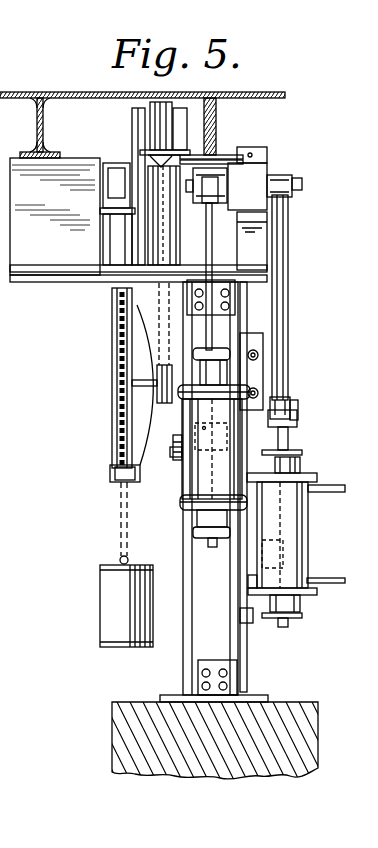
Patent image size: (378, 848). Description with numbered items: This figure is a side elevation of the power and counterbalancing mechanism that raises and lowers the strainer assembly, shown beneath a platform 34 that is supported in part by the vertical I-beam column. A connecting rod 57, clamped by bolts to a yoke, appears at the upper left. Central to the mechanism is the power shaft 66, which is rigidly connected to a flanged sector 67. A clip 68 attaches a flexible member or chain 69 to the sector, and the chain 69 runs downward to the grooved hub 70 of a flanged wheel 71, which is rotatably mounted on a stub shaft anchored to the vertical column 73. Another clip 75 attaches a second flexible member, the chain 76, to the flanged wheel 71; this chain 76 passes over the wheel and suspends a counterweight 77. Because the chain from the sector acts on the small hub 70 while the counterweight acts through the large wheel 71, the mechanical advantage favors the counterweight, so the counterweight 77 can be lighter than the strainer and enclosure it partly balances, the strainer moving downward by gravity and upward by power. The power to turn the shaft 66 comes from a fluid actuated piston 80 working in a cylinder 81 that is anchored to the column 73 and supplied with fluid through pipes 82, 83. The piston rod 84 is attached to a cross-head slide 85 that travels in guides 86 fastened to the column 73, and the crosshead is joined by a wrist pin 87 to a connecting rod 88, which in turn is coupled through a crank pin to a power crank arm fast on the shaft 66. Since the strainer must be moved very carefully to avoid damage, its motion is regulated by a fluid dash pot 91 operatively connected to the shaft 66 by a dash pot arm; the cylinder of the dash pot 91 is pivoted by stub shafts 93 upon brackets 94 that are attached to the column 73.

The platform 34 is at (62, 96).
The connecting rod 57 is at (30, 107).
The power shaft 66 is at (197, 178).
The flanged sector 67 is at (168, 228).
The clip 68 is at (371, 133).
The chain 69 is at (162, 303).
The grooved hub 70 is at (172, 410).
The flanged wheel 71 is at (113, 418).
The vertical column 73 is at (235, 645).
The clip 75 is at (115, 480).
The chain 76 is at (130, 523).
The counterweight 77 is at (125, 637).
The fluid actuated piston 80 is at (273, 555).
The cylinder 81 is at (297, 523).
The pipe 82 is at (337, 583).
The pipe 83 is at (338, 487).
The piston rod 84 is at (287, 440).
The cross-head slide 85 is at (298, 408).
The guides 86 is at (258, 370).
The wrist pin 87 is at (282, 397).
The connecting rod 88 is at (282, 303).
The fluid dash pot 91 is at (193, 482).
The stub shafts 93 is at (187, 470).
The brackets 94 is at (115, 155).